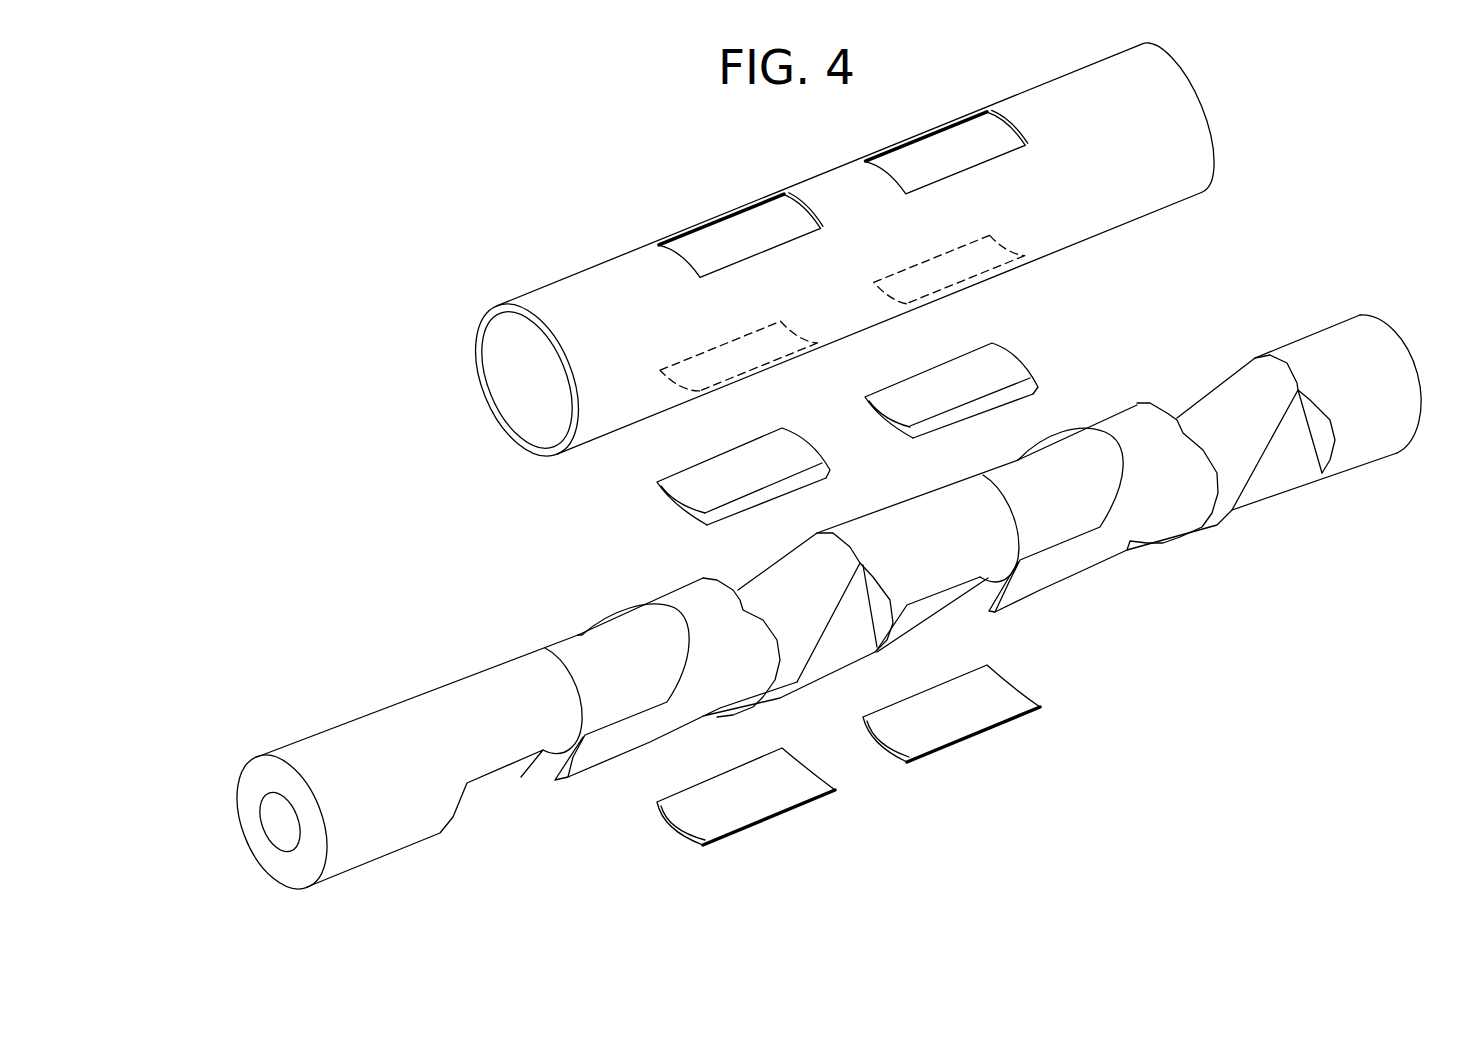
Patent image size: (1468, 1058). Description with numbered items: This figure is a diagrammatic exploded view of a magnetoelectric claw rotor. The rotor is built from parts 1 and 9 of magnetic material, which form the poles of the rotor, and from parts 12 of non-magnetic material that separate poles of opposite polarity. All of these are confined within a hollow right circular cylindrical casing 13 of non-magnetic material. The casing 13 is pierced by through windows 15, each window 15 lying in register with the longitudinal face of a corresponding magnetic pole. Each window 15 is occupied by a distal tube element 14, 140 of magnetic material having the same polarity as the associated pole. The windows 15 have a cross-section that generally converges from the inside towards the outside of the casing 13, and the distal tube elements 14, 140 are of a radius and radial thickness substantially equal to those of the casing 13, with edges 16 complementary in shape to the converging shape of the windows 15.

The part of magnetic material 1 is at (368, 722).
The part of magnetic material 9 is at (900, 518).
The part of non-magnetic material 12 is at (1135, 428).
The hollow right circular cylindrical casing 13 is at (1212, 94).
The distal tube element 14 is at (703, 483).
The distal tube element 140 is at (1002, 363).
The window 15 is at (720, 240).
The edges 16 is at (960, 413).